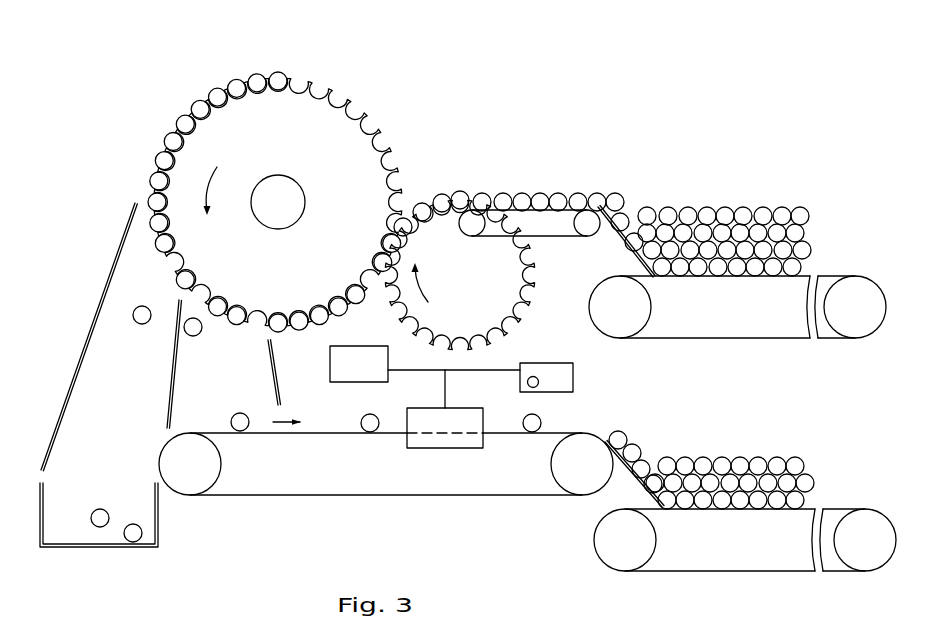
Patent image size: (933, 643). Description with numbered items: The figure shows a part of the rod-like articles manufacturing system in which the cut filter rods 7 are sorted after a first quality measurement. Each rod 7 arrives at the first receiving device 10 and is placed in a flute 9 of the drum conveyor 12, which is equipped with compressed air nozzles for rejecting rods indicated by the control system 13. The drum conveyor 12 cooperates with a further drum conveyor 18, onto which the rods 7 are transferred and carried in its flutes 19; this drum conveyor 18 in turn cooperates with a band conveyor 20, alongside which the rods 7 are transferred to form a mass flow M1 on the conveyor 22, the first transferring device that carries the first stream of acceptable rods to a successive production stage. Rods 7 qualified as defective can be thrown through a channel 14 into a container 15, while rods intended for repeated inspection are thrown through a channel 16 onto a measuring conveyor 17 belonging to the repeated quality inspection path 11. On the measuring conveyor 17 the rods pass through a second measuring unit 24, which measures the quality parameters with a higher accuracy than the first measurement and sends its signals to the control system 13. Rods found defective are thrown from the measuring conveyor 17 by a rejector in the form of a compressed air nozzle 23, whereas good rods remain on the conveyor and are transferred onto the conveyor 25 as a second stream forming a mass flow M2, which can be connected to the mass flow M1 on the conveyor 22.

The filter rod 7 is at (157, 158).
The flute 9 is at (367, 123).
The first receiving device 10 is at (168, 97).
The repeated quality inspection path 11 is at (265, 532).
The drum conveyor 12 is at (307, 110).
The control system 13 is at (372, 374).
The channel 14 is at (108, 345).
The container 15 is at (97, 547).
The channel 16 is at (203, 365).
The measuring conveyor 17 is at (362, 495).
The drum conveyor 18 is at (440, 243).
The flute 19 is at (399, 280).
The band conveyor 20 is at (533, 202).
The conveyor 22 is at (835, 277).
The compressed air nozzle 23 is at (562, 378).
The second measuring unit 24 is at (438, 446).
The conveyor 25 is at (840, 507).
The mass flow M1 is at (703, 195).
The mass flow M2 is at (725, 445).